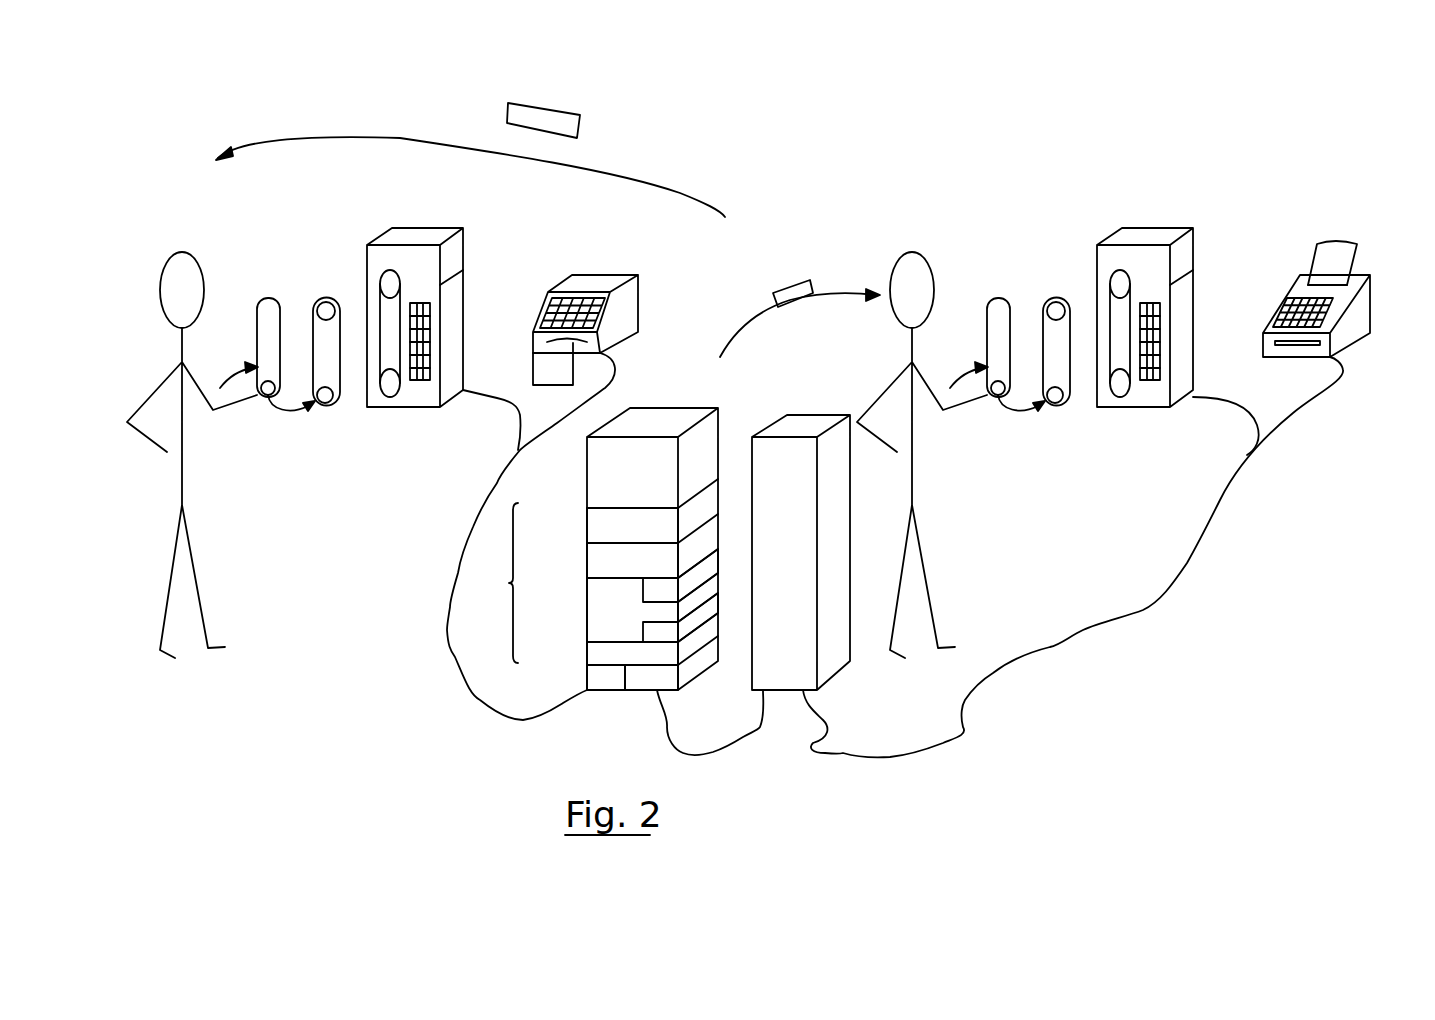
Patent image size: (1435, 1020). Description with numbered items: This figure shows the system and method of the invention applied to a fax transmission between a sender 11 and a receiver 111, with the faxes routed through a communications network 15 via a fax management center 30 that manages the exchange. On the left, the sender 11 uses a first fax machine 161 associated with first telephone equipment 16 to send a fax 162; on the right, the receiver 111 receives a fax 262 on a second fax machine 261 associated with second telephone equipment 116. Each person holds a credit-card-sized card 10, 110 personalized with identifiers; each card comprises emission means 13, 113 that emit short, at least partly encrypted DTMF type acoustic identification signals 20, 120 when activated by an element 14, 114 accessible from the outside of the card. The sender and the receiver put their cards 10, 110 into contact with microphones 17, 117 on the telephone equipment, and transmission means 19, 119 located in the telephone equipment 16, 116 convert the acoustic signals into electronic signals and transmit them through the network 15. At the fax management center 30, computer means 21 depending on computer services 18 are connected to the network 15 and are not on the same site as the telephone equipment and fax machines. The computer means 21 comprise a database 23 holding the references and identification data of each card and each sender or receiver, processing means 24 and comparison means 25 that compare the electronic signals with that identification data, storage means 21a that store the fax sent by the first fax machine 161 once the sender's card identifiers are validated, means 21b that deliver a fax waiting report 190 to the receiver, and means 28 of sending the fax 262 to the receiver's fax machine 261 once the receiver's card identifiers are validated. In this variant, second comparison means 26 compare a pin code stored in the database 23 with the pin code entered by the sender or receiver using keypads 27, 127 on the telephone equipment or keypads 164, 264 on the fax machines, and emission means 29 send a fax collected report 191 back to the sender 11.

The card 10 is at (268, 303).
The sender 11 is at (185, 262).
The emission means 13 is at (267, 397).
The element accessible from outside the card 14 is at (230, 368).
The communications network 15 is at (455, 560).
The first telephone equipment 16 is at (420, 238).
The microphone 17 is at (327, 410).
The computer services 18 is at (662, 415).
The transmission means 19 is at (462, 252).
The acoustic identification signals 20 is at (292, 412).
The computer means 21 is at (497, 583).
The storage means 21a is at (612, 683).
The means of delivering a fax waiting report 21b is at (635, 683).
The database 23 is at (593, 608).
The processing means 24 is at (593, 657).
The comparison means 25 is at (703, 570).
The second comparison means 26 is at (687, 625).
The keypad 27 is at (417, 383).
The means of sending a fax 28 is at (598, 563).
The emission means 29 is at (598, 528).
The fax management center 30 is at (798, 420).
The card 110 is at (998, 303).
The receiver 111 is at (915, 262).
The emission means 113 is at (997, 397).
The element accessible from outside the card 114 is at (955, 366).
The second telephone equipment 116 is at (1150, 238).
The microphone 117 is at (1057, 410).
The transmission means 119 is at (1192, 252).
The acoustic identification signals 120 is at (1022, 412).
The keypad 127 is at (1147, 383).
The first fax machine 161 is at (640, 287).
The fax 162 is at (553, 377).
The keypad 164 is at (590, 307).
The fax waiting report 190 is at (797, 290).
The fax collected report 191 is at (563, 127).
The second fax machine 261 is at (1372, 285).
The fax 262 is at (1313, 260).
The keypad 264 is at (1320, 320).